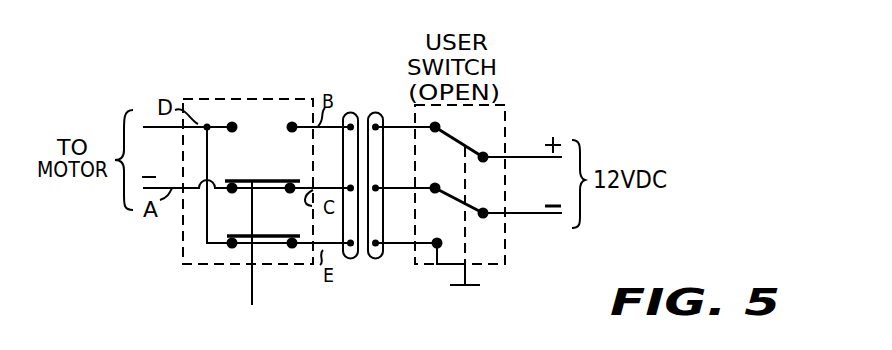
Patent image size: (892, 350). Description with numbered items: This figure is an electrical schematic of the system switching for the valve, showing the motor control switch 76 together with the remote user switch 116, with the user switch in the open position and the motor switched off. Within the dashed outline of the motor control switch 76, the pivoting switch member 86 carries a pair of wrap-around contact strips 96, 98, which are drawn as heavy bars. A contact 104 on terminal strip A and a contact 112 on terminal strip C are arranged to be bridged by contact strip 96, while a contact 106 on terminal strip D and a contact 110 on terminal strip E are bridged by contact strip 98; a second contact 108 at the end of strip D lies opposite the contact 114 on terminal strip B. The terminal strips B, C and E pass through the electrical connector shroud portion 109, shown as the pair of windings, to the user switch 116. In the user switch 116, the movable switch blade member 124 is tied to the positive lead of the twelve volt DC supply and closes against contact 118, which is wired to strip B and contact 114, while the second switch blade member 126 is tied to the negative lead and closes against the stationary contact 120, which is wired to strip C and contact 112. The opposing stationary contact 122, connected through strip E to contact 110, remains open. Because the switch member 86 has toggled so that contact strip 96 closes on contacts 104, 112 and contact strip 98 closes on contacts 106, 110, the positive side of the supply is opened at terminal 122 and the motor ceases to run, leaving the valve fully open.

The motor control switch 76 is at (262, 94).
The switch member 86 is at (254, 292).
The contact strip 96 is at (248, 178).
The contact strip 98 is at (234, 240).
The contact 104 is at (229, 184).
The contact 106 is at (232, 248).
The second contact 108 is at (231, 123).
The contact 110 is at (290, 248).
The contact 112 is at (289, 190).
The contact 114 is at (292, 123).
The electrical connector shroud portion 109 is at (351, 258).
The remote user switch 116 is at (515, 100).
The contact 118 is at (431, 125).
The stationary contact 120 is at (434, 184).
The stationary contact 122 is at (438, 250).
The movable switch blade member 124 is at (461, 144).
The second switch blade member 126 is at (458, 212).